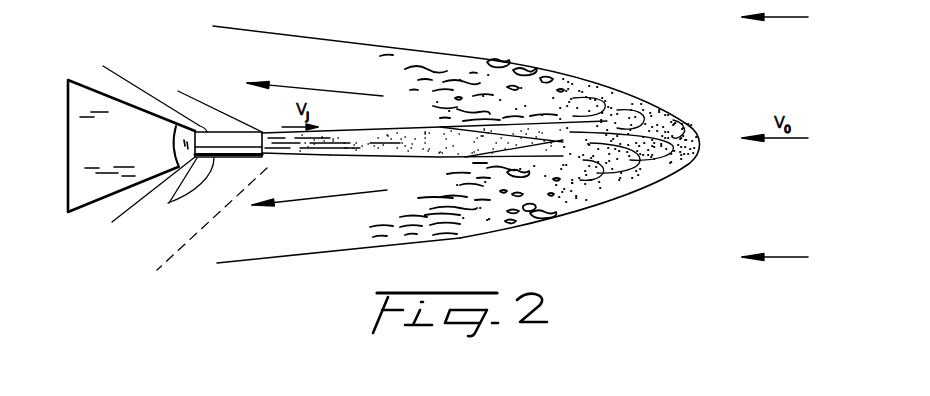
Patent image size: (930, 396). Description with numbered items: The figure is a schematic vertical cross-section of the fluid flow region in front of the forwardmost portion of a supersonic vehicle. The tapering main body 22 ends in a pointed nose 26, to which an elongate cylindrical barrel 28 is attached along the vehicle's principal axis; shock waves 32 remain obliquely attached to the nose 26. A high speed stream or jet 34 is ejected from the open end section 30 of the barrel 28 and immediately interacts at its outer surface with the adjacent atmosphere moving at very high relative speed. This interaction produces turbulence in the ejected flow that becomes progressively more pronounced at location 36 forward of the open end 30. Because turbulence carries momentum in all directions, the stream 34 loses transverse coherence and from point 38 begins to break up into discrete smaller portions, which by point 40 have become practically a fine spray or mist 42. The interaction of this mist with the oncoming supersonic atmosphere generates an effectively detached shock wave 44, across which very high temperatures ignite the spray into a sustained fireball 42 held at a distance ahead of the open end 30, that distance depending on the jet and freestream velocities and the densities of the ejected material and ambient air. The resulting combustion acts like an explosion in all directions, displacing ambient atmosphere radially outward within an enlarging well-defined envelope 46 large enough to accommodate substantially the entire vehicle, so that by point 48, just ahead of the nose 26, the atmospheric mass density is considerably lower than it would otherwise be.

The main body 22 is at (86, 201).
The pointed nose 26 is at (199, 131).
The elongate cylindrical barrel 28 is at (178, 190).
The open end section of barrel 30 is at (268, 132).
The shock waves 32 is at (116, 219).
The high speed stream or jet 34 is at (273, 156).
The location of pronounced turbulence 36 is at (428, 127).
The break-up point 38 is at (563, 143).
The fine spray point 40 is at (607, 143).
The fine spray or mist / fireball 42 is at (667, 155).
The detached shock wave 44 is at (698, 139).
The envelope 46 is at (315, 256).
The point ahead of nose 48 is at (202, 231).